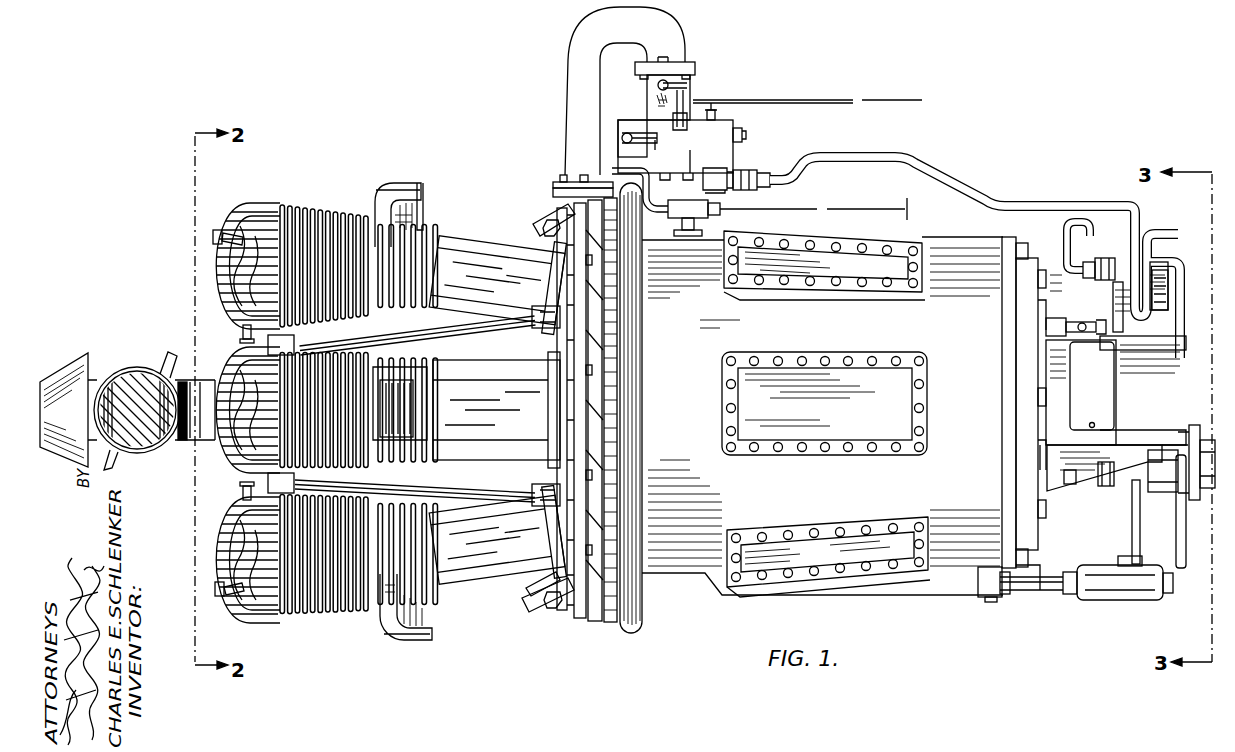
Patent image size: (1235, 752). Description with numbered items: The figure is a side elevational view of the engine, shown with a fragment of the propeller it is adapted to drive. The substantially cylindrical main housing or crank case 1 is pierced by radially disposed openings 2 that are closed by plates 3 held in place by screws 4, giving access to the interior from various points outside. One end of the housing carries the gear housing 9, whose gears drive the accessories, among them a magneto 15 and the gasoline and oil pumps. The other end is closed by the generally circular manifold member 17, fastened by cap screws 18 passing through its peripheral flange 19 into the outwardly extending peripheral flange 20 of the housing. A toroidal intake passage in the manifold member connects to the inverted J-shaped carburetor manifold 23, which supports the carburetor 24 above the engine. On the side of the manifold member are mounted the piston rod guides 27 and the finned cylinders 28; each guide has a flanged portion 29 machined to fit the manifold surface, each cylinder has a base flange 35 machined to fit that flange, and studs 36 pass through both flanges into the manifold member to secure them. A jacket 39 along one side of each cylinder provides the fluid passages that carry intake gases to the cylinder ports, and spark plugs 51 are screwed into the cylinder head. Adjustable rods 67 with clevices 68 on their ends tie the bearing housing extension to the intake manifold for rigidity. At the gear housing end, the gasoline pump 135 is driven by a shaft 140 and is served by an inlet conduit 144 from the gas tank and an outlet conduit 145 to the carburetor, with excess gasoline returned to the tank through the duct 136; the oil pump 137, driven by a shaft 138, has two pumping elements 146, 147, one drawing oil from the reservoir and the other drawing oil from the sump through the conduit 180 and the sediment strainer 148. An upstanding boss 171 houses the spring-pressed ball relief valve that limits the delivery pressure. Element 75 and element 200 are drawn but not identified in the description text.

The main housing 1 is at (953, 260).
The radially disposed openings 2 is at (838, 293).
The plates 3 is at (921, 281).
The screws 4 is at (750, 284).
The gear housing 9 is at (1032, 297).
The magneto 15 is at (1150, 355).
The manifold member 17 is at (580, 616).
The cap screws 18 is at (594, 620).
The peripheral flange of the manifold 19 is at (610, 622).
The peripheral flange of the housing 20 is at (626, 634).
The carburetor manifold 23 is at (563, 65).
The carburetor 24 is at (720, 147).
The piston rod guide 27 is at (547, 260).
The cylinder 28 is at (310, 206).
The flanged portion 29 is at (540, 226).
The base flange 35 is at (547, 600).
The studs 36 is at (515, 585).
The jacket 39 is at (462, 240).
The spark plug 51 is at (224, 231).
The adjustable rods 67 is at (463, 328).
The clevices 68 is at (545, 240).
The exhaust pipe 75 is at (118, 372).
The gasoline pump 135 is at (1170, 302).
The duct 136 is at (1078, 241).
The oil pump 137 is at (1163, 478).
The shaft 138 is at (1070, 482).
The shaft 140 is at (1062, 321).
The inlet conduit 144 is at (1166, 230).
The outlet conduit 145 is at (948, 170).
The pumping element 146 is at (1190, 503).
The pumping element 147 is at (1108, 480).
The sediment strainer 148 is at (1118, 600).
The upstanding boss 171 is at (1196, 424).
The conduit 180 is at (1130, 548).
The T fitting 200 is at (767, 168).